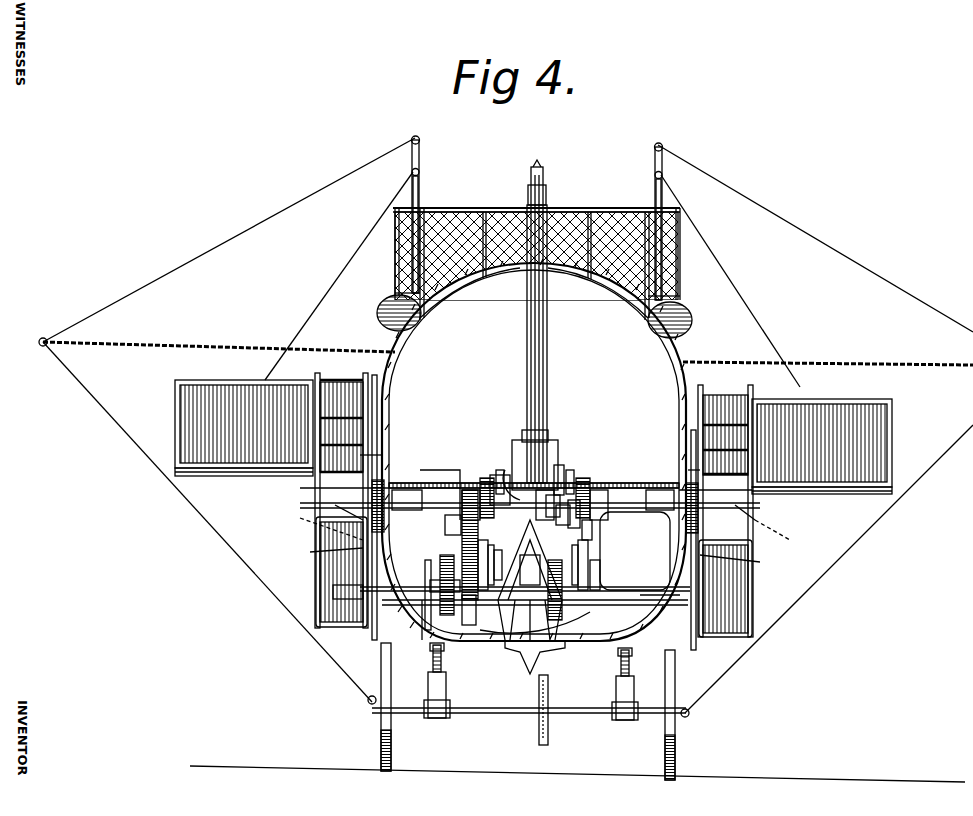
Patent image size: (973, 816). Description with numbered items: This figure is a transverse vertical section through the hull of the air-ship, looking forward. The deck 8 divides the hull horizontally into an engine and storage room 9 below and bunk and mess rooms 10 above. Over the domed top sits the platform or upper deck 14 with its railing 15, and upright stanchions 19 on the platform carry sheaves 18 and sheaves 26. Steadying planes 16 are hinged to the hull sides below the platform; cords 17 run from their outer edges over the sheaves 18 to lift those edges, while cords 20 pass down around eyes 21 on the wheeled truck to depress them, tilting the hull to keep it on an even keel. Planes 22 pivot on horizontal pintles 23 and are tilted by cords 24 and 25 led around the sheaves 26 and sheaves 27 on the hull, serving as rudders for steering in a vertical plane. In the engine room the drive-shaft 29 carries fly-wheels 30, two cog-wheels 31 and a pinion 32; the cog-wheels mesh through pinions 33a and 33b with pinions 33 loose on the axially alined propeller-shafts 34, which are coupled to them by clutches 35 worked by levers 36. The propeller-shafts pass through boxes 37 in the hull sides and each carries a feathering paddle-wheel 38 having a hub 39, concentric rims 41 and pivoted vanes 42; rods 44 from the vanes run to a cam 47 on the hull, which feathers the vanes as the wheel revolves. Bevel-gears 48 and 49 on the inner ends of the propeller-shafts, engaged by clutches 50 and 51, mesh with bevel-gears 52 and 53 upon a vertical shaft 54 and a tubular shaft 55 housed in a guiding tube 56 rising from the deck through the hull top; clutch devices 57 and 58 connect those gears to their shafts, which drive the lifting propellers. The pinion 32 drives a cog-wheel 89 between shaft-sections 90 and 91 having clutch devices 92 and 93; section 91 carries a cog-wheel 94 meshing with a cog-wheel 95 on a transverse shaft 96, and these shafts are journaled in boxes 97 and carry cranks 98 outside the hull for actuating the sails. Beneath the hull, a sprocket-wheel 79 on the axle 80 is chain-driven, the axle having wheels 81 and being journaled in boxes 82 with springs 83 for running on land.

The deck 8 is at (534, 475).
The engine and storage room 9 is at (535, 578).
The bunk and mess rooms 10 is at (534, 450).
The platform or upper deck 14 is at (394, 298).
The railing 15 is at (398, 258).
The steadying planes 16 is at (508, 343).
The ropes or cords 17 is at (508, 240).
The sheaves 18 is at (528, 204).
The upright stanchions 19 is at (412, 182).
The ropes or cords 20 is at (222, 539).
The eyes 21 is at (368, 700).
The planes 22 is at (533, 437).
The horizontal pintles 23 is at (533, 493).
The cords 24 is at (532, 279).
The cords 25 is at (330, 505).
The sheaves 26 is at (419, 172).
The sheaves 27 is at (527, 556).
The drive-shaft 29 is at (462, 535).
The fly-wheels 30 is at (478, 548).
The cog-wheels 31 is at (488, 560).
The pinion 32 is at (494, 565).
The pinions 33 is at (487, 478).
The pinion 33a is at (445, 520).
The pinion 33b is at (500, 470).
The propeller-shafts 34 is at (425, 470).
The clutches 35 is at (470, 490).
The levers 36 is at (565, 620).
The boxes 37 is at (398, 490).
The feathering paddle-wheel 38 is at (316, 572).
The hub 39 is at (527, 532).
The concentric rims 41 is at (536, 493).
The vanes 42 is at (537, 495).
The rods 44 is at (377, 425).
The cam 47 is at (371, 492).
The bevel-gear 48 is at (562, 505).
The bevel-gear 49 is at (512, 470).
The clutch 50 is at (574, 500).
The clutch 51 is at (506, 470).
The bevel-gear 52 is at (562, 580).
The bevel-gear 53 is at (553, 495).
The vertical shaft 54 is at (537, 165).
The tubular shaft 55 is at (546, 190).
The guiding and supporting tube 56 is at (547, 200).
The clutch device 57 is at (560, 465).
The clutch device 58 is at (546, 490).
The sprocket-wheel 79 is at (556, 716).
The axle 80 is at (529, 724).
The wheels 81 is at (380, 730).
The boxes 82 is at (440, 688).
The springs 83 is at (441, 662).
The cog-wheel 89 is at (522, 660).
The shaft-section 90 is at (612, 578).
The shaft-section 91 is at (428, 632).
The clutch device 92 is at (428, 660).
The clutch device 93 is at (495, 640).
The cog-wheel 94 is at (438, 581).
The cog-wheel 95 is at (447, 615).
The shaft 96 is at (481, 612).
The boxes 97 is at (525, 577).
The cranks 98 is at (499, 616).